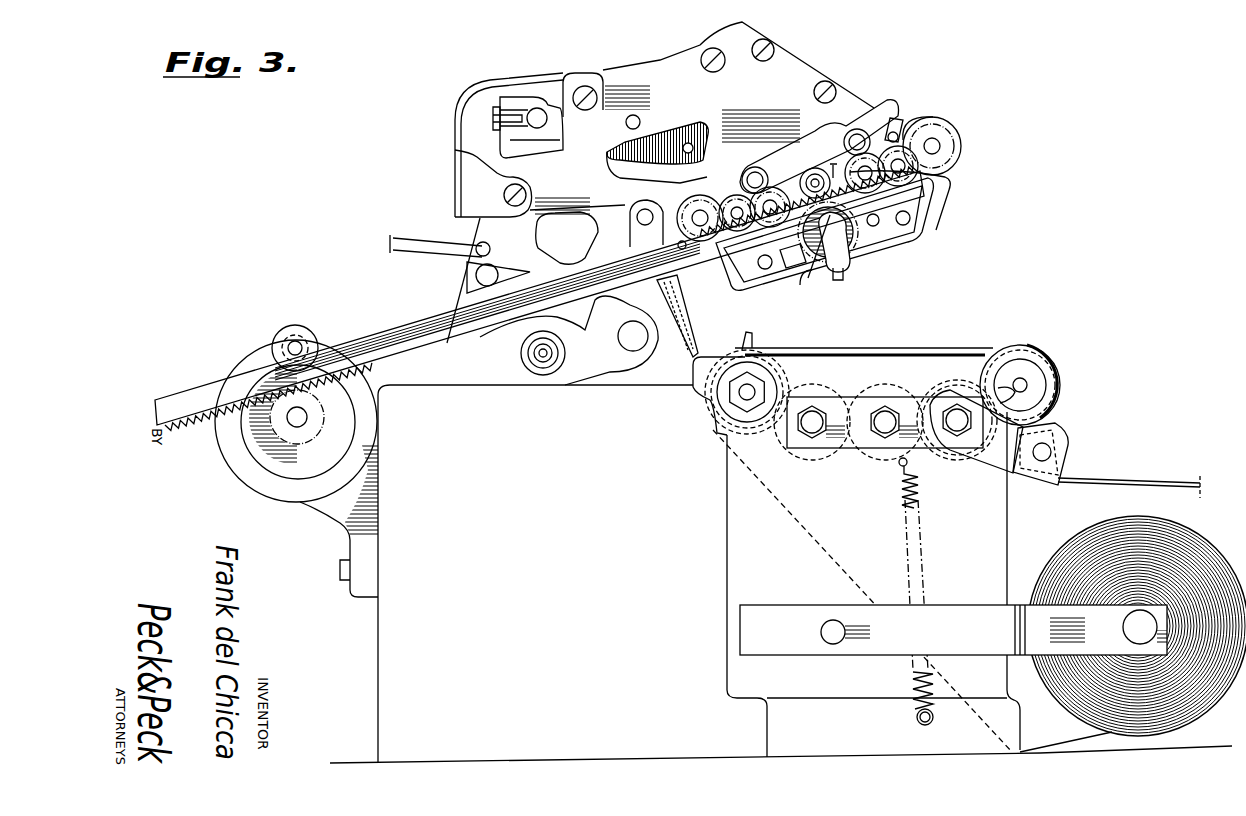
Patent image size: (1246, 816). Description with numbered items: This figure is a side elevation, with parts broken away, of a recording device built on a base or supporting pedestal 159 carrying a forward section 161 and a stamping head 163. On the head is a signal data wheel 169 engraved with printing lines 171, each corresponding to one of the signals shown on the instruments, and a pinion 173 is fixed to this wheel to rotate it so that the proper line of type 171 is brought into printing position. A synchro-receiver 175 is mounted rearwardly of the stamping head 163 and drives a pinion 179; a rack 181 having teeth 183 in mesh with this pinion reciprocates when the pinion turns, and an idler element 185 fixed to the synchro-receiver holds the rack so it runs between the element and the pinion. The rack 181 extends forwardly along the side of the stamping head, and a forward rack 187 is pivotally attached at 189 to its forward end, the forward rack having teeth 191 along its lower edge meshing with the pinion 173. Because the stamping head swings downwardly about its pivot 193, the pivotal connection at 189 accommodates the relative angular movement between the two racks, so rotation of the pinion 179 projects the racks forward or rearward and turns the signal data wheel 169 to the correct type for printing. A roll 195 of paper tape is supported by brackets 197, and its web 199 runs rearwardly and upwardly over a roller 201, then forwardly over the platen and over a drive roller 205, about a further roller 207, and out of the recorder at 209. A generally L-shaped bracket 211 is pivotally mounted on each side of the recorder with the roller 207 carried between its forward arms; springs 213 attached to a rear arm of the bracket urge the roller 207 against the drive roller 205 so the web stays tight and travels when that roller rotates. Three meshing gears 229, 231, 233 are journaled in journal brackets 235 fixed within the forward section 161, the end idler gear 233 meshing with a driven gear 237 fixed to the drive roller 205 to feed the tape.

The base or supporting pedestal 159 is at (570, 644).
The forward section 161 is at (997, 518).
The stamping head 163 is at (872, 82).
The signal data wheel 169 is at (813, 270).
The printing lines 171 is at (836, 272).
The pinion 173 is at (815, 265).
The synchro-receiver 175 is at (237, 482).
The pinion 179 is at (305, 395).
The rack 181 is at (177, 396).
The teeth 183 is at (190, 430).
The idler element 185 is at (295, 325).
The forward rack 187 is at (925, 182).
The pivotal attachment 189 is at (684, 250).
The teeth 191 is at (920, 224).
The pivot 193 is at (543, 366).
The roll of tape 195 is at (1190, 533).
The brackets 197 is at (1000, 610).
The web 199 is at (812, 527).
The roller 201 is at (784, 370).
The drive roller 205 is at (1050, 372).
The roller 207 is at (1073, 441).
The web exit 209 is at (1128, 482).
The L-shaped bracket 211 is at (690, 313).
The springs 213 is at (628, 207).
The gear 229 is at (810, 453).
The gear 231 is at (880, 453).
The end idler gear 233 is at (957, 455).
The journal brackets 235 is at (853, 397).
The driven gear 237 is at (1065, 388).